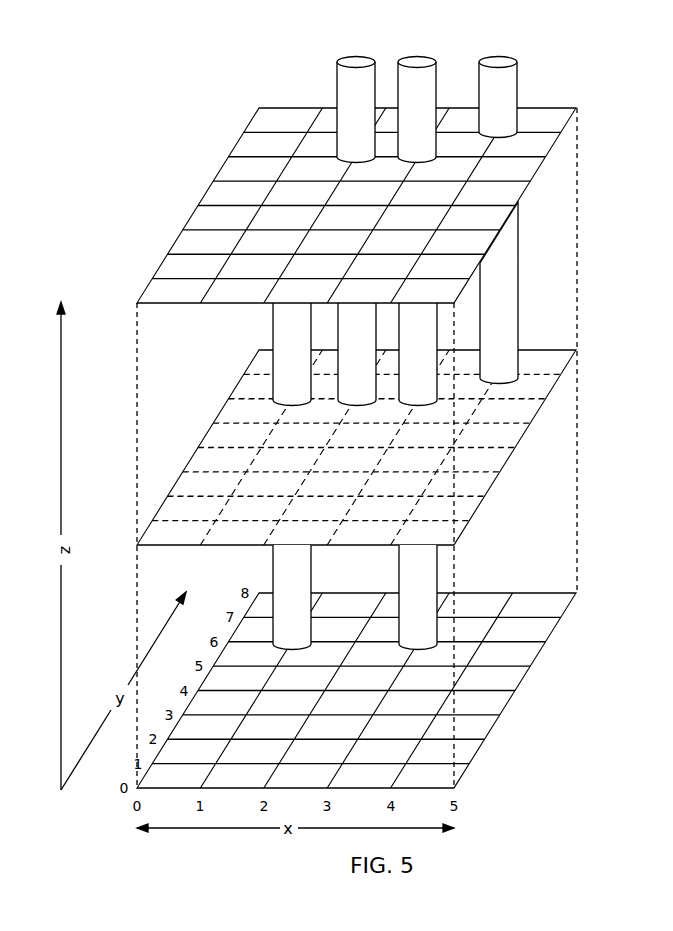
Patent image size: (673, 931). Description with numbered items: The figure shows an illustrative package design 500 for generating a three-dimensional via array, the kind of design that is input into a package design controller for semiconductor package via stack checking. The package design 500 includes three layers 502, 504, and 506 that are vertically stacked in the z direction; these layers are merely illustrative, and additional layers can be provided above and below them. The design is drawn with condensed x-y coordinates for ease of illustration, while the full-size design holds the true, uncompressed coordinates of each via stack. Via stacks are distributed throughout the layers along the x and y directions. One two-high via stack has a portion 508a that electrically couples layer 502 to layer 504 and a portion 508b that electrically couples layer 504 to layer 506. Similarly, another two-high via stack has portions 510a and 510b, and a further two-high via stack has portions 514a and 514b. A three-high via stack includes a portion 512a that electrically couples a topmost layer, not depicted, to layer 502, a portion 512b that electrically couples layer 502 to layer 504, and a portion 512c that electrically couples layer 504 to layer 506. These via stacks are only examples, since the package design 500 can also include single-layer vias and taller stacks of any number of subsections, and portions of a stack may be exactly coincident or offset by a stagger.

The package design 500 is at (108, 88).
The layer 502 is at (539, 107).
The layer 504 is at (553, 350).
The layer 506 is at (570, 593).
The portion of via stack 508 508a is at (273, 338).
The portion of via stack 508 508b is at (273, 562).
The portion of via stack 510 510a is at (337, 70).
The portion of via stack 510 510b is at (362, 404).
The portion of via stack 512 512a is at (417, 56).
The portion of via stack 512 512b is at (432, 405).
The portion of via stack 512 512c is at (438, 562).
The portion of via stack 514 514a is at (512, 56).
The portion of via stack 514 514b is at (519, 228).